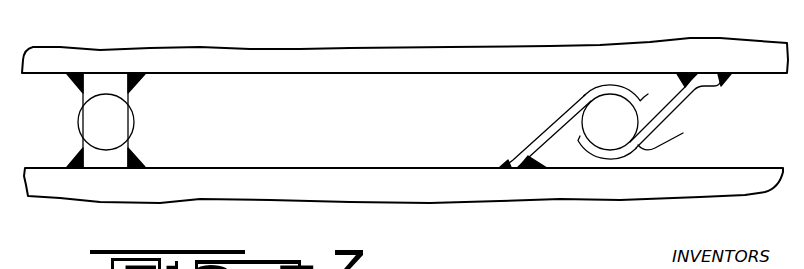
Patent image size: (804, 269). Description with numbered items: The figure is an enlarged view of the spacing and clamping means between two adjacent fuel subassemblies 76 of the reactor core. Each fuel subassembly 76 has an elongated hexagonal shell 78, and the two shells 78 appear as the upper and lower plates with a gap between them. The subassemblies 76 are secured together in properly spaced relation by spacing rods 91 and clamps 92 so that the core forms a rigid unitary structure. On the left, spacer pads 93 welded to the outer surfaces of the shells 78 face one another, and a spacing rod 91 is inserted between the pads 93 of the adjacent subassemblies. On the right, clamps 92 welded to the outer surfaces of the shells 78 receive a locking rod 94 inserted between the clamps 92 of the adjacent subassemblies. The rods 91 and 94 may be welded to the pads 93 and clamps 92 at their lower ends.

The fuel subassembly 76 is at (300, 50).
The hexagonal shell 78 is at (393, 73).
The spacing rod 91 is at (133, 120).
The clamp 92 is at (648, 94).
The spacer pad 93 is at (128, 94).
The locking rod 94 is at (602, 108).